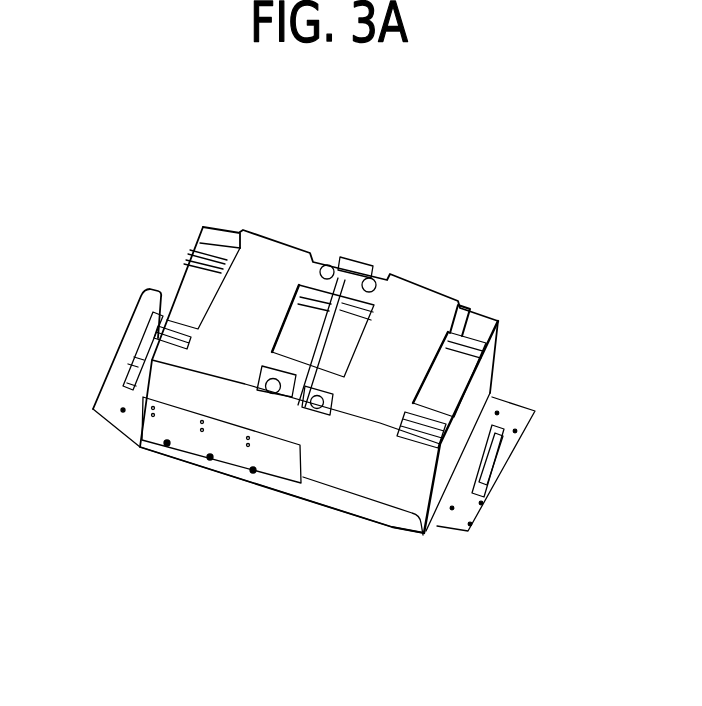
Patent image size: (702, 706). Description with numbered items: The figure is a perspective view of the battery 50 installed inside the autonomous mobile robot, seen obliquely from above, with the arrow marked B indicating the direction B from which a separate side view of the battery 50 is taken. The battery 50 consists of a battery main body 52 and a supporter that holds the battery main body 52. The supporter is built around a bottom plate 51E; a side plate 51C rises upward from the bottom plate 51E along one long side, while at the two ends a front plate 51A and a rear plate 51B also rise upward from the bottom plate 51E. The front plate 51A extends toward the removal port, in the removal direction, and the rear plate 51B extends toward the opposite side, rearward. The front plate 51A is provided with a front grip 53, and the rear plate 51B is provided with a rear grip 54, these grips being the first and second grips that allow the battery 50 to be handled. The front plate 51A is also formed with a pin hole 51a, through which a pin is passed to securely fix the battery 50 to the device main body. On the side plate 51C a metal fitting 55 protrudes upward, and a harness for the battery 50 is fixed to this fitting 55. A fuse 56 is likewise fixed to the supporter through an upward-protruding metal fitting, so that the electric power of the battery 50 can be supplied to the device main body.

The battery 50 is at (502, 243).
The direction B is at (455, 223).
The front plate 51A is at (96, 371).
The rear plate 51B is at (520, 434).
The side plate 51C is at (377, 524).
The bottom plate 51E is at (299, 507).
The pin hole 51a is at (124, 413).
The battery main body 52 is at (289, 243).
The front grip 53 is at (140, 334).
The rear grip 54 is at (486, 452).
The metal fitting 55 is at (194, 447).
The fuse 56 is at (352, 259).